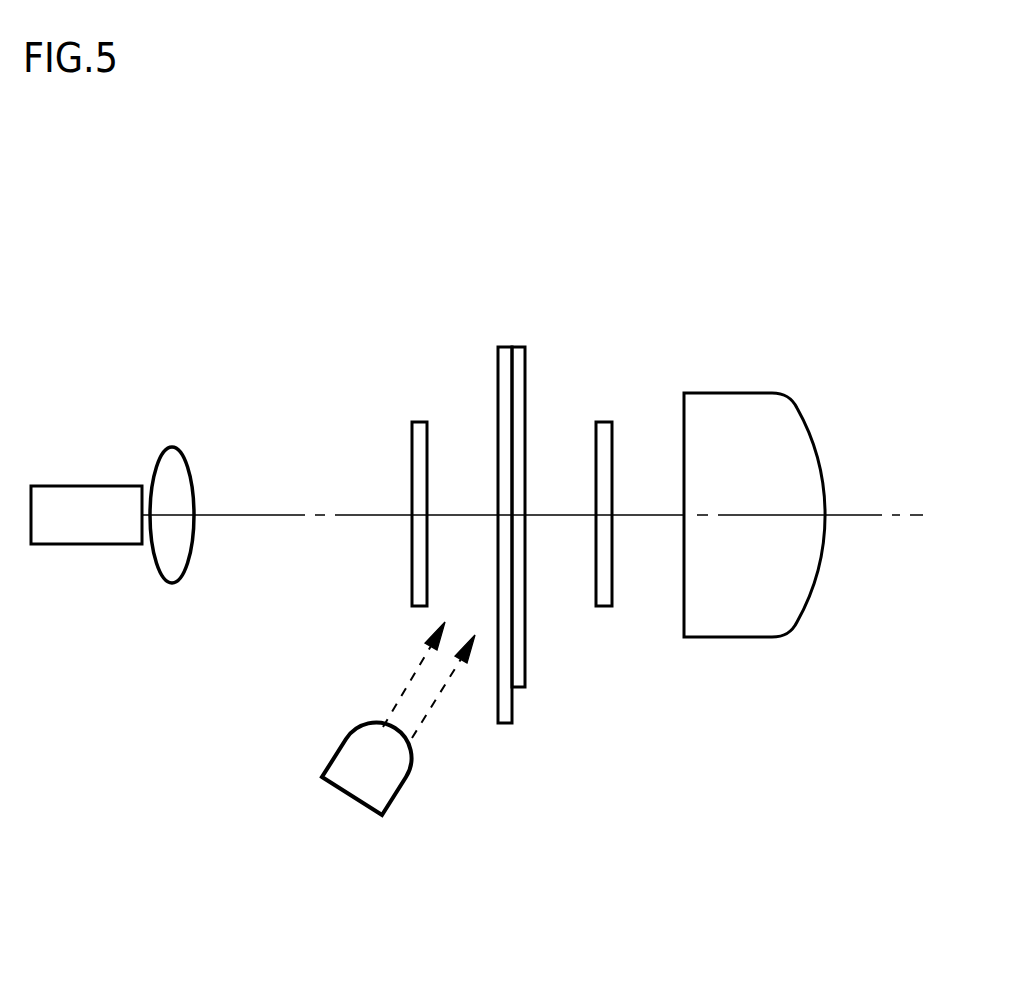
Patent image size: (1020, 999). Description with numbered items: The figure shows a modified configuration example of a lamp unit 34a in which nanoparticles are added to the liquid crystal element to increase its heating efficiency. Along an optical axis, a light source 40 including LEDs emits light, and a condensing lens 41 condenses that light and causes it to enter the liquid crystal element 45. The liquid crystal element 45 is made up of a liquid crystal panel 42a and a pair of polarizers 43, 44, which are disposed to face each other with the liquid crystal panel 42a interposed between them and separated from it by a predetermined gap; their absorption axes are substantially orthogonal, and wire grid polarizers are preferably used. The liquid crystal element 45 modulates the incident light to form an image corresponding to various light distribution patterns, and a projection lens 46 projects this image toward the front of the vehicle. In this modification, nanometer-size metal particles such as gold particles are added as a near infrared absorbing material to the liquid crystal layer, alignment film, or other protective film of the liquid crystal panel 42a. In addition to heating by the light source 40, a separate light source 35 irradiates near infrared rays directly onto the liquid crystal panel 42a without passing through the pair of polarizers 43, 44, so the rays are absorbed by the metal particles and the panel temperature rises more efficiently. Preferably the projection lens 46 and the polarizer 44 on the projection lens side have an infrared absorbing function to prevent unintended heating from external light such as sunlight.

The lamp unit 34a is at (163, 325).
The light source 40 is at (52, 487).
The condensing lens 41 is at (170, 448).
The liquid crystal element 45 is at (642, 237).
The polarizer 43 is at (420, 422).
The liquid crystal panel 42a is at (506, 347).
The polarizer 44 is at (598, 422).
The projection lens 46 is at (750, 392).
The light source 35 is at (398, 798).